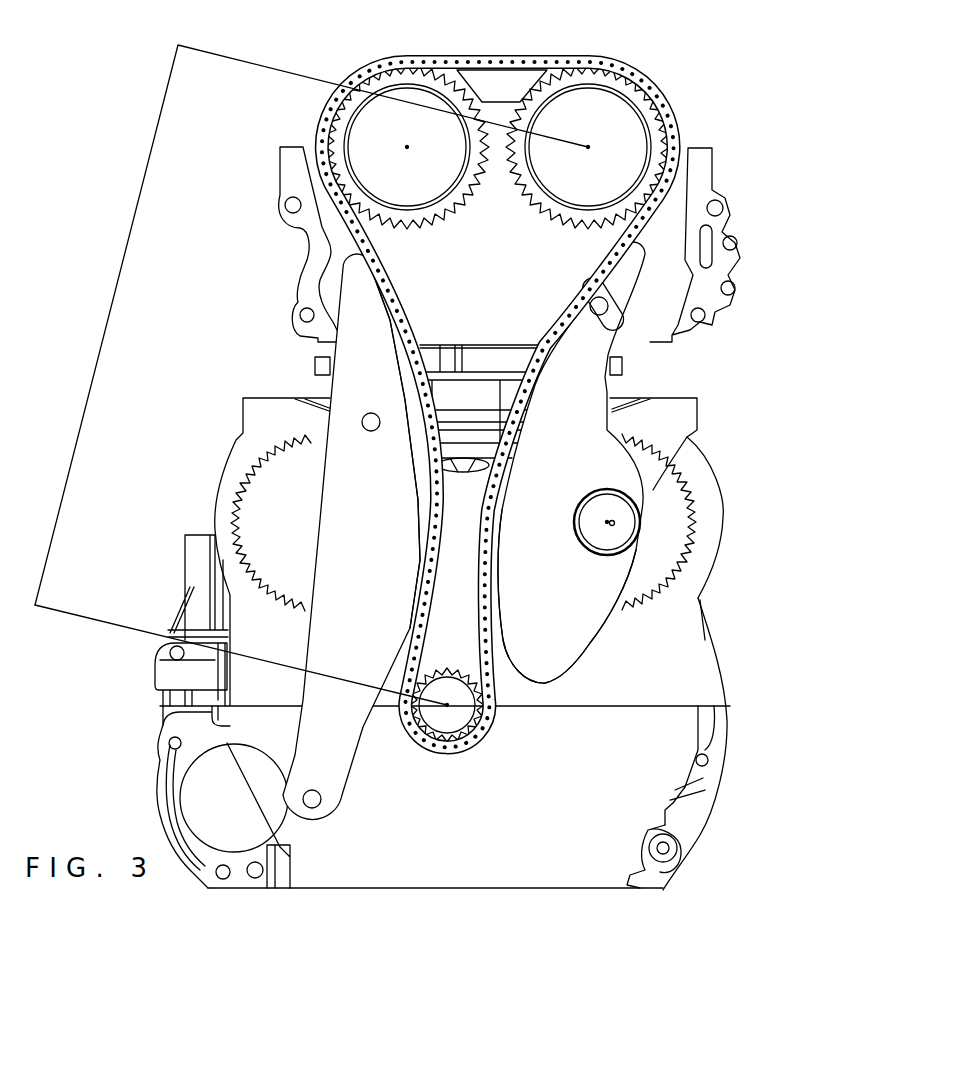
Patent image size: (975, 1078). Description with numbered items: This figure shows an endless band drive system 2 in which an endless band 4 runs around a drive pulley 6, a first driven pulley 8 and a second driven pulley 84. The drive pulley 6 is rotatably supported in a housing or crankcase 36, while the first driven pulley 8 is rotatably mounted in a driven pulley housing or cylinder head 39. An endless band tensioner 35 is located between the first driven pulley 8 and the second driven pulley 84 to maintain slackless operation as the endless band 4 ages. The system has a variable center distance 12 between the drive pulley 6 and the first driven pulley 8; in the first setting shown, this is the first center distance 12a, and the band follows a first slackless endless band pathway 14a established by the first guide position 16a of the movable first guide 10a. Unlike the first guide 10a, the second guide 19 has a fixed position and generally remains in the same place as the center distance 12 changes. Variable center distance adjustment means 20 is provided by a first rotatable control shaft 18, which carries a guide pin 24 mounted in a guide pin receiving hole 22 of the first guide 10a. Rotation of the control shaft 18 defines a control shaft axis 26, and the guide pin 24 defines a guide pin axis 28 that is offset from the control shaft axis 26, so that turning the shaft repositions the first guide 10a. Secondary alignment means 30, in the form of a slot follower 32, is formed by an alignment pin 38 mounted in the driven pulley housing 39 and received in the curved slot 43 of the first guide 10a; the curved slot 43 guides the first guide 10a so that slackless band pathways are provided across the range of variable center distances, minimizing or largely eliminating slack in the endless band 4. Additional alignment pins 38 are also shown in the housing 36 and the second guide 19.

The endless band drive system 2 is at (760, 380).
The endless band 4 is at (353, 240).
The drive pulley 6 is at (457, 752).
The first driven pulley 8 is at (578, 184).
The second driven pulley 84 is at (405, 184).
The first guide 10a is at (572, 642).
The variable center distance 12 is at (311, 325).
The first center distance 12a is at (241, 511).
The first slackless endless band pathway 14a is at (397, 297).
The first guide position 16a is at (594, 398).
The first rotatable control shaft 18 is at (597, 537).
The second guide 19 is at (382, 592).
The variable center distance adjustment means 20 is at (760, 638).
The guide pin receiving hole 22 is at (633, 543).
The guide pin 24 is at (628, 529).
The control shaft axis 26 is at (614, 522).
The guide pin axis 28 is at (606, 520).
The secondary alignment means 30 is at (760, 302).
The slot follower 32 is at (191, 620).
The endless band tensioner 35 is at (505, 83).
The housing or crankcase 36 is at (683, 722).
The alignment pin 38 is at (363, 415).
The driven pulley housing or cylinder head 39 is at (703, 190).
The curved slot 43 is at (605, 305).